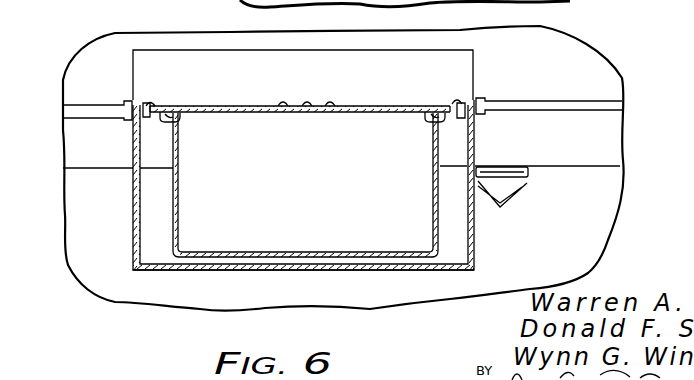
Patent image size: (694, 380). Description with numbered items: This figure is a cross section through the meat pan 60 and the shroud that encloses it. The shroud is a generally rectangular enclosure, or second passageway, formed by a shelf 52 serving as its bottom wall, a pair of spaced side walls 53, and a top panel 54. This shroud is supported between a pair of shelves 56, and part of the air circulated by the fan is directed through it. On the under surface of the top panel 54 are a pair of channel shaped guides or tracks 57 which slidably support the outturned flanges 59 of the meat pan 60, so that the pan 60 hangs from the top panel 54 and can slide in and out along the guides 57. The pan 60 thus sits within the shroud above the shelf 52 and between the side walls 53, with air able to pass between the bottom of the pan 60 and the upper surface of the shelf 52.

The shelf 52 is at (228, 334).
The side walls 53 is at (133, 209).
The top panel 54 is at (430, 103).
The shelves 56 is at (112, 105).
The channel shaped guides 57 is at (158, 120).
The outturned flanges 59 is at (178, 122).
The meat pan 60 is at (306, 329).